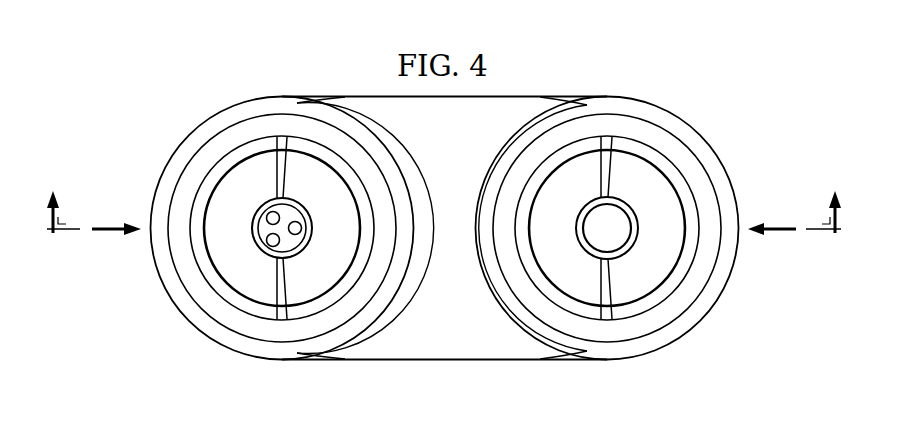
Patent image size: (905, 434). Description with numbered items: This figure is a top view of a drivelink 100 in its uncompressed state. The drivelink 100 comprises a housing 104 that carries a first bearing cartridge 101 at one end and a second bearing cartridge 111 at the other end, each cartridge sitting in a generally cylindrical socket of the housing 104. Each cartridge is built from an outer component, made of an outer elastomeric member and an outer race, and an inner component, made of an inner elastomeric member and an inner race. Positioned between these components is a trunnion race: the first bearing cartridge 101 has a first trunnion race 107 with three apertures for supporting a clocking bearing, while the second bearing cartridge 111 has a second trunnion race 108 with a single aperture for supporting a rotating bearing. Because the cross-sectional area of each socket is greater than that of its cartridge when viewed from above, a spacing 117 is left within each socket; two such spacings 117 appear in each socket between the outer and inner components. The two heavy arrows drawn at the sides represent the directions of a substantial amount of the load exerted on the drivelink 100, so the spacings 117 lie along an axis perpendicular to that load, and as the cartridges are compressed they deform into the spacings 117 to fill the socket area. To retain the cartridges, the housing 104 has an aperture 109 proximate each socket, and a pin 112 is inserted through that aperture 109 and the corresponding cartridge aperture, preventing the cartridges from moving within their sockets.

The drivelink 100 is at (586, 64).
The first bearing cartridge 101 is at (657, 182).
The housing 104 is at (277, 367).
The first trunnion race 107 is at (291, 214).
The second trunnion race 108 is at (597, 214).
The aperture 109 is at (149, 229).
The second bearing cartridge 111 is at (235, 182).
The pin 112 is at (149, 233).
The spacing 117 is at (277, 297).